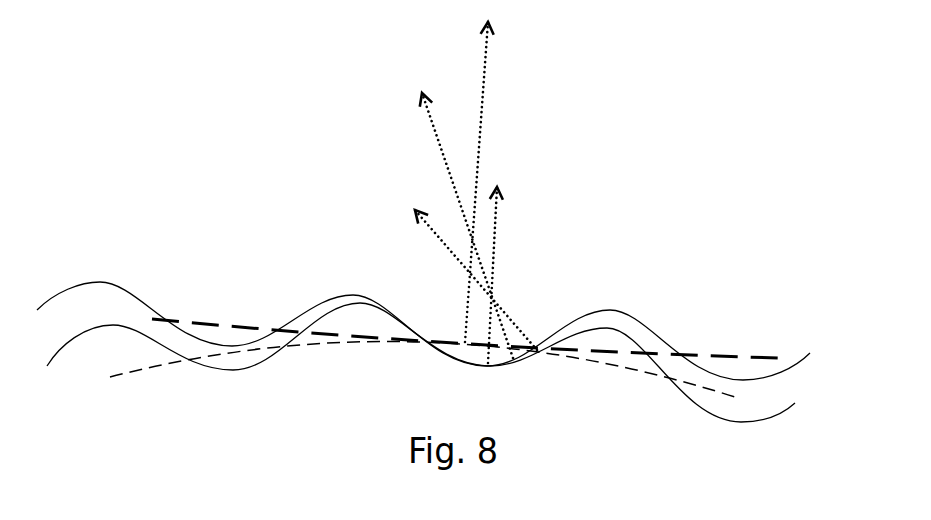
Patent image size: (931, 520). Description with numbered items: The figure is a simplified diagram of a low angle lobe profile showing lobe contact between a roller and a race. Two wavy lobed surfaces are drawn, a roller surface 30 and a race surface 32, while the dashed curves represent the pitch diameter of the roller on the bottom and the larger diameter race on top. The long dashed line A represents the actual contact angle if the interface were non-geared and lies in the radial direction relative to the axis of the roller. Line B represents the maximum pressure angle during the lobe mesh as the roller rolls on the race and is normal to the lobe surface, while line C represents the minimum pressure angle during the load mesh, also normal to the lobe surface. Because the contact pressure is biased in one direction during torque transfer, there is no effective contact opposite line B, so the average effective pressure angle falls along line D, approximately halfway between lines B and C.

The first wavy layer 30 is at (615, 328).
The second wavy layer 32 is at (742, 378).
The long dashed line A is at (486, 75).
The line representing maximum pressure angle B is at (443, 243).
The line representing minimum pressure angle C is at (498, 225).
The line of average effective pressure angle D is at (438, 148).